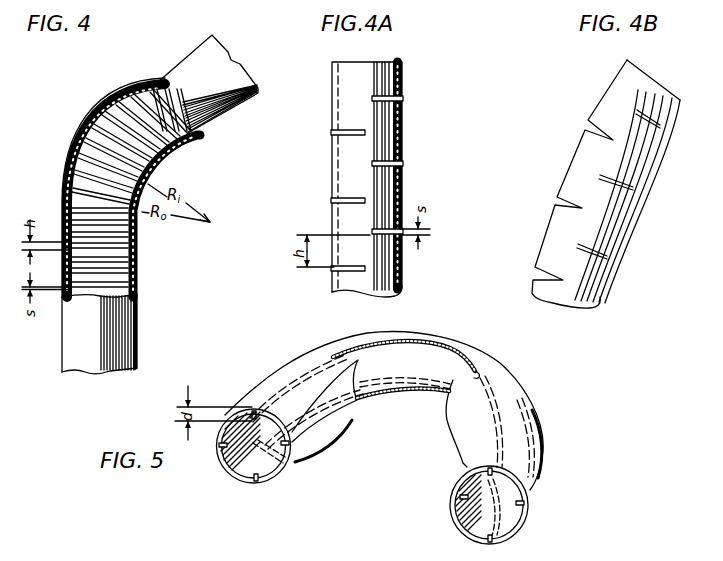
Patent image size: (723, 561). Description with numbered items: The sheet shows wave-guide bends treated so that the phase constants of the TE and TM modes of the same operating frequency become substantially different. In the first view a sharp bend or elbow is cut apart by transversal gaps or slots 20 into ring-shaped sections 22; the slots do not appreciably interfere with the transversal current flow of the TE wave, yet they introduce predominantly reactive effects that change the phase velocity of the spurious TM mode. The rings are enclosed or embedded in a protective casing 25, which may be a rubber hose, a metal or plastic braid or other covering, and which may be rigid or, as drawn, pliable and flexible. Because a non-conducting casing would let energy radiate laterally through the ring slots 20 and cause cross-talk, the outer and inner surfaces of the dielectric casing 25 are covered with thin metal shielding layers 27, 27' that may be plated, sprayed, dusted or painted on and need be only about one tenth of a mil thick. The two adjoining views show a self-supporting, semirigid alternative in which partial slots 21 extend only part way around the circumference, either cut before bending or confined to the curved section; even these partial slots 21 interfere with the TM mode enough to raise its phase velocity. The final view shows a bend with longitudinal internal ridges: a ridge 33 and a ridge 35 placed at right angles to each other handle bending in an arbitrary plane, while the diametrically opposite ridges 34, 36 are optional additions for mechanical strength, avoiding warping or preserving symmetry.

In FIG. 4, the transversal slots 20 is at (131, 88).
In FIG. 4A, the partial slots 21 is at (331, 132).
In FIG. 4B, the partial slots 21 is at (587, 129).
In FIG. 4, the ring-shaped sections 22 is at (190, 138).
In FIG. 4, the protective casing 25 is at (138, 306).
In FIG. 4, the metal shielding layer 27 is at (98, 190).
In FIG. 4, the metal shielding layer 27' is at (93, 187).
In FIG. 5, the ridge 33 is at (256, 420).
In FIG. 5, the ridge 34 is at (262, 482).
In FIG. 5, the ridge 35 is at (222, 465).
In FIG. 5, the ridge 36 is at (290, 463).